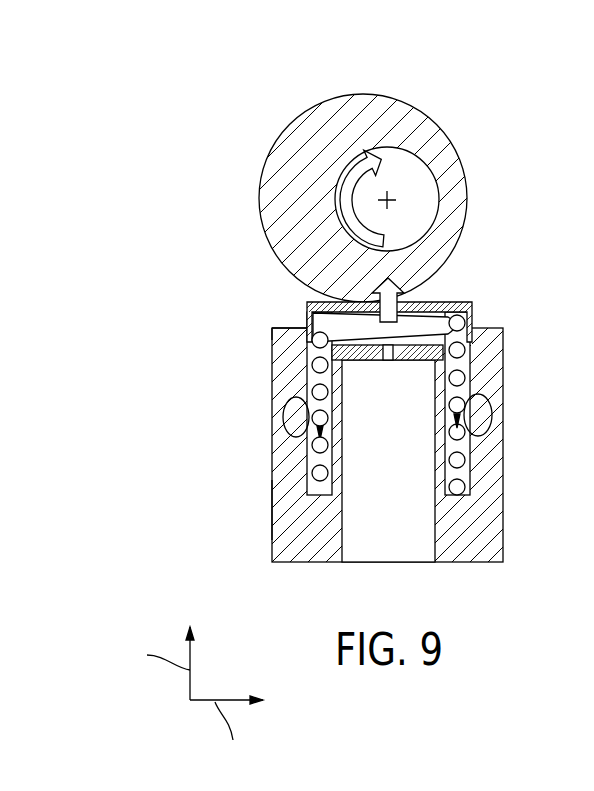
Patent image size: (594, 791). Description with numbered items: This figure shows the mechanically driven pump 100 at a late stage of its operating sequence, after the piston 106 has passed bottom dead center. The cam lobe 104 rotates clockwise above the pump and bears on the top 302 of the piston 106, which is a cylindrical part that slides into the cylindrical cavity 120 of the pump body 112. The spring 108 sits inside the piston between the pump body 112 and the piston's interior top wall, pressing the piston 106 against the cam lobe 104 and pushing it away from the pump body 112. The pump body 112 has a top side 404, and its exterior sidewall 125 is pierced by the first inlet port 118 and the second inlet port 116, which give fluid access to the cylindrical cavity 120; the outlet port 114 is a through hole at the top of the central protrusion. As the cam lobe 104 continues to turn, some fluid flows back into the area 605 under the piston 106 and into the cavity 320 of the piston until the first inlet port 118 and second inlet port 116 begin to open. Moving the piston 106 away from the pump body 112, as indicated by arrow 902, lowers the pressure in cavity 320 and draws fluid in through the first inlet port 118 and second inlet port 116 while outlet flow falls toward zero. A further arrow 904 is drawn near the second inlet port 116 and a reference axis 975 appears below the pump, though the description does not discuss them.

The mechanically driven pump 100 is at (247, 100).
The cam lobe 104 is at (465, 220).
The piston 106 is at (472, 303).
The spring 108 is at (463, 323).
The pump body 112 is at (505, 517).
The outlet port 114 is at (382, 360).
The second inlet port 116 is at (482, 413).
The first inlet port 118 is at (286, 417).
The cylindrical cavity 120 is at (315, 458).
The exterior sidewall 125 is at (272, 510).
The top 302 is at (378, 300).
The cavity 320 is at (463, 393).
The top side 404 is at (285, 328).
The area under the piston 605 is at (470, 342).
The arrow 902 is at (370, 290).
The right pin 904 is at (472, 420).
The coordinate axes 975 is at (215, 670).